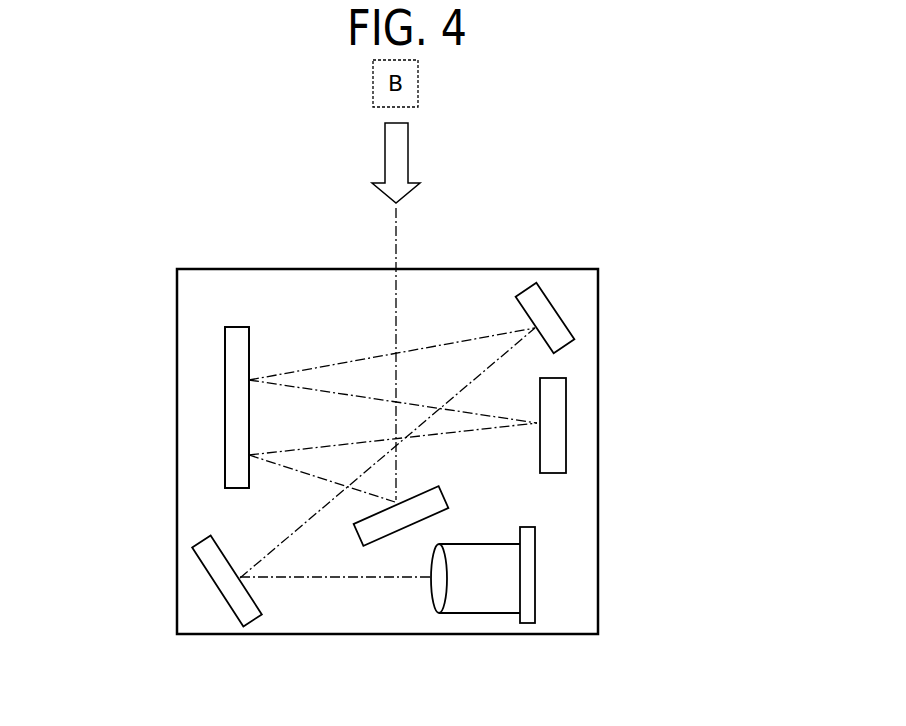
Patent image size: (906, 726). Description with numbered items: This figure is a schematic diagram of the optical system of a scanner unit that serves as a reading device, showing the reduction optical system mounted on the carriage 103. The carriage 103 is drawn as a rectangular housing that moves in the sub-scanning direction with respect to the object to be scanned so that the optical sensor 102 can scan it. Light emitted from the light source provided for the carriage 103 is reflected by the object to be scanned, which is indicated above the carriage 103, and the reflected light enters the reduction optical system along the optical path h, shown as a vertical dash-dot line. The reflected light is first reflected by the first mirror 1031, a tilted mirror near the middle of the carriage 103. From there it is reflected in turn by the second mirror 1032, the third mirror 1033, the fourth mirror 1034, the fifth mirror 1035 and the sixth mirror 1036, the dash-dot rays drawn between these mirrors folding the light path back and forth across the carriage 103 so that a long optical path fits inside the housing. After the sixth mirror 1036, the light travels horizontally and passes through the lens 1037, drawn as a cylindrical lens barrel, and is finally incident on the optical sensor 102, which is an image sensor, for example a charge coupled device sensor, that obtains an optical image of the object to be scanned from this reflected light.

The optical sensor 102 is at (535, 622).
The carriage 103 is at (598, 269).
The first mirror 1031 is at (448, 497).
The second mirror 1032 is at (225, 452).
The third mirror 1033 is at (566, 412).
The fourth mirror 1034 is at (225, 362).
The fifth mirror 1035 is at (566, 318).
The sixth mirror 1036 is at (198, 567).
The lens 1037 is at (433, 610).
The optical path h is at (396, 243).